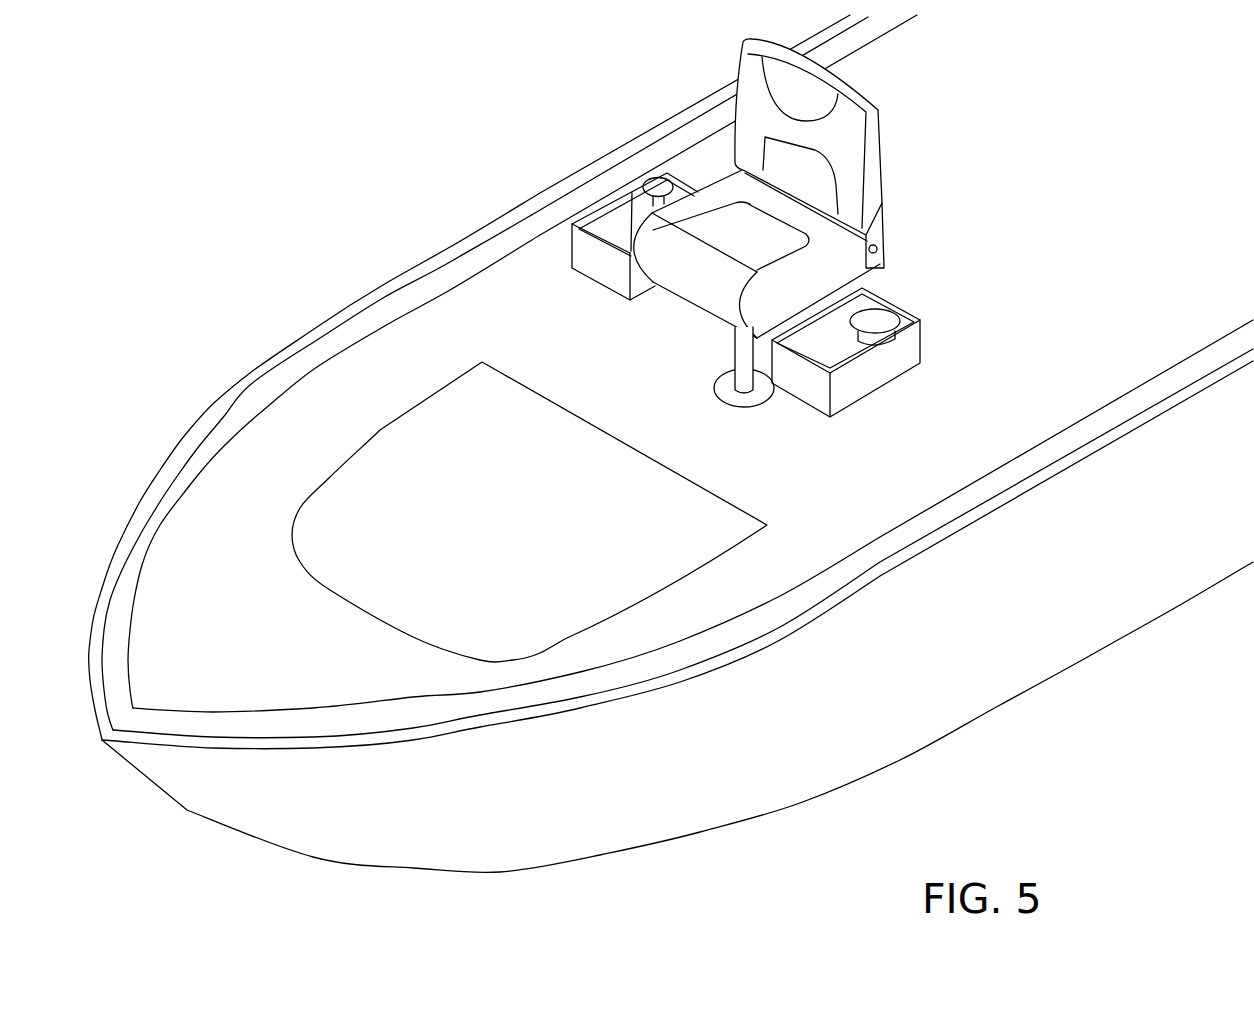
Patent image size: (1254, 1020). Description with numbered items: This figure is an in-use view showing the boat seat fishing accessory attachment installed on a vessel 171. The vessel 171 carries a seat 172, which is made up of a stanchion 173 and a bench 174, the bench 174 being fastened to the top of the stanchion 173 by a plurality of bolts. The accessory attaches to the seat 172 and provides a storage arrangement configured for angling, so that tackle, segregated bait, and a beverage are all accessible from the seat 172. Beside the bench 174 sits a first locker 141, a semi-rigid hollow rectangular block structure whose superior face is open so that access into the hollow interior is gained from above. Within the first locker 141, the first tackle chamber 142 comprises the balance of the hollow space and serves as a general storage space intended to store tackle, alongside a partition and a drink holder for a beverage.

The vessel 171 is at (675, 114).
The seat 172 is at (852, 82).
The stanchion 173 is at (741, 358).
The bench 174 is at (833, 243).
The first locker 141 is at (612, 218).
The first tackle chamber 142 is at (851, 361).